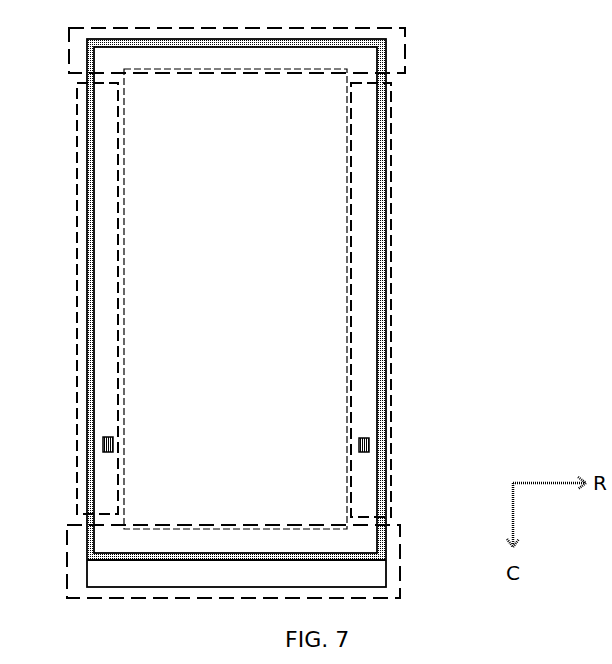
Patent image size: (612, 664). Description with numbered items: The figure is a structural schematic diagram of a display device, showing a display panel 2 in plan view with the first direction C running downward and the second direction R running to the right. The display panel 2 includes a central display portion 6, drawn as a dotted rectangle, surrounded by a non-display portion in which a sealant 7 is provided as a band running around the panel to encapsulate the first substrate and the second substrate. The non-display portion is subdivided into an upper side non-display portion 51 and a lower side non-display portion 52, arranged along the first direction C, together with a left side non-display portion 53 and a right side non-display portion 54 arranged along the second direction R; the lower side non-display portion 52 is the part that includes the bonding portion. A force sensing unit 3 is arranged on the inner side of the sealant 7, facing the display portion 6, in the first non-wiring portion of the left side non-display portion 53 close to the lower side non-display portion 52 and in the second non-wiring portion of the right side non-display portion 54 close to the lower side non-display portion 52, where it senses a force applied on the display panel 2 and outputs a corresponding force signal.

The display panel 2 is at (87, 322).
The force sensing unit 3 is at (102, 443).
The display portion 6 is at (145, 249).
The sealant 7 is at (92, 413).
The upper side non-display portion 51 is at (67, 55).
The lower side non-display portion 52 is at (65, 555).
The left side non-display portion 53 is at (77, 137).
The right side non-display portion 54 is at (390, 138).